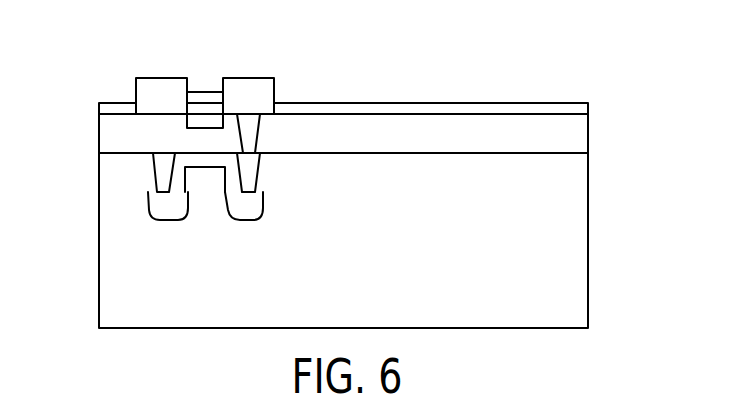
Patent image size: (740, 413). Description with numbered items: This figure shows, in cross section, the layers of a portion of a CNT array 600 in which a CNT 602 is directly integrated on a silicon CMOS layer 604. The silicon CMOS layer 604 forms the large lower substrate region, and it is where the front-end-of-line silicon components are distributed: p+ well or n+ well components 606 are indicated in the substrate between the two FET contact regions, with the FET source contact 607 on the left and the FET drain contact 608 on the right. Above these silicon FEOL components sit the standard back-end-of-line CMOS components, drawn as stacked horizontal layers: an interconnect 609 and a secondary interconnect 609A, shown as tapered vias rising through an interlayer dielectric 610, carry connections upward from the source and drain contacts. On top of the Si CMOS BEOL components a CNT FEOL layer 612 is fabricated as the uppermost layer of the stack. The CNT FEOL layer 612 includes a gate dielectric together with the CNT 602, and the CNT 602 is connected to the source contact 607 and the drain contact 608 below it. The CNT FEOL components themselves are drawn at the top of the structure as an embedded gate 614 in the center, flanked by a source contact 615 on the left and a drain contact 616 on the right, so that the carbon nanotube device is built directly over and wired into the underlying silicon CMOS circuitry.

The CNT array 600 is at (531, 84).
The CNT 602 is at (202, 92).
The silicon CMOS layer 604 is at (580, 252).
The p+ well or n+ well components 606 is at (209, 229).
The FET source contact 607 is at (145, 210).
The FET drain contact 608 is at (263, 207).
The interconnect 609 is at (262, 118).
The secondary interconnect 609A is at (148, 160).
The interlayer dielectric 610 is at (110, 133).
The CNT FEOL layer 612 is at (596, 105).
The embedded gate 614 is at (187, 122).
The source contact 615 is at (157, 78).
The drain contact 616 is at (247, 78).